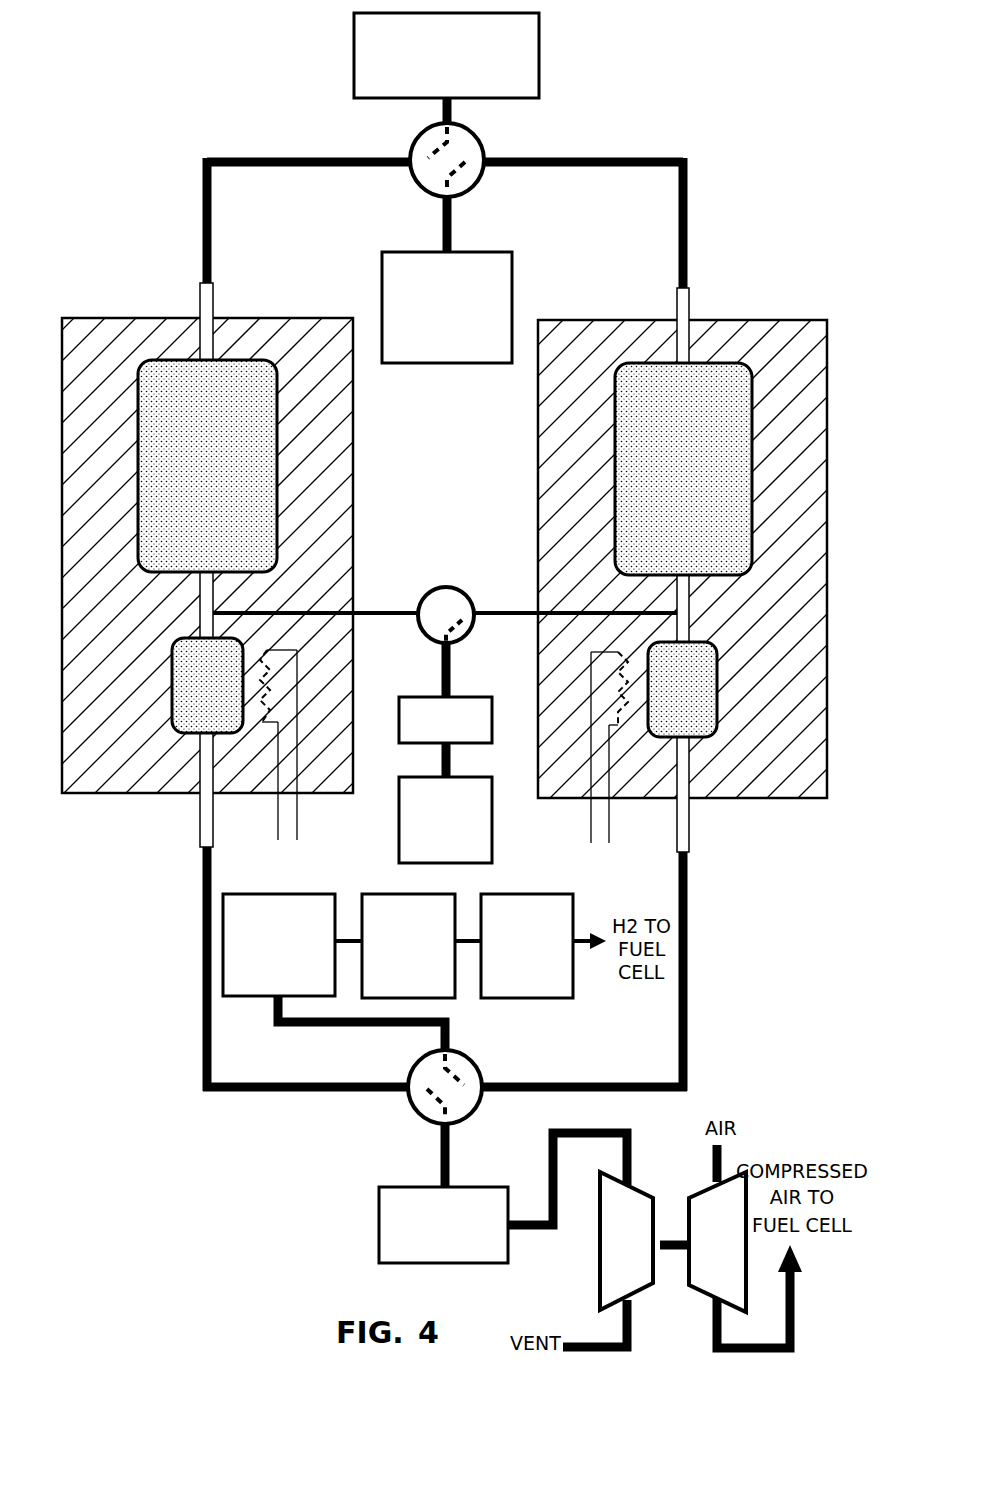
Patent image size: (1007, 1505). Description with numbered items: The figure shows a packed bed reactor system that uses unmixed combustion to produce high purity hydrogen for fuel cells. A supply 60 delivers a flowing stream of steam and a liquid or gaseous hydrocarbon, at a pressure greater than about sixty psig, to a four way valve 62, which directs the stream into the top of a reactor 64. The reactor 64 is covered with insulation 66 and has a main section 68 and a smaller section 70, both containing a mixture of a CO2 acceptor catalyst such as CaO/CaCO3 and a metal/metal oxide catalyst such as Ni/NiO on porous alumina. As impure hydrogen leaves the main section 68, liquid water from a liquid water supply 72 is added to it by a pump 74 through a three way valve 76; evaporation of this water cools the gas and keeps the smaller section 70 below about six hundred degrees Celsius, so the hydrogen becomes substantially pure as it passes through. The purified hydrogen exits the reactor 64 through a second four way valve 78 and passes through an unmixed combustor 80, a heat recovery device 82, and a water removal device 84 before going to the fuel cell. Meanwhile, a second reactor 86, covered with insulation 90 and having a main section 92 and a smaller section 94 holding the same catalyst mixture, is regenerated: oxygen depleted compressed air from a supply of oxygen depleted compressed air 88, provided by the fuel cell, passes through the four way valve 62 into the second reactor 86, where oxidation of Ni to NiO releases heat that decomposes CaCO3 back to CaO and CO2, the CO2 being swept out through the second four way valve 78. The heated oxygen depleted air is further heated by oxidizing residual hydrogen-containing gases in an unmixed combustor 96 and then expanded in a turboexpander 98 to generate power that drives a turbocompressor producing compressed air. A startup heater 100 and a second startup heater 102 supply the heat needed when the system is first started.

The supply 60 is at (398, 262).
The four way valve 62 is at (470, 184).
The reactor 64 is at (680, 302).
The insulation 66 is at (538, 400).
The main section 68 is at (669, 478).
The smaller section 70 is at (668, 703).
The liquid water supply 72 is at (485, 828).
The pump 74 is at (412, 705).
The three way valve 76 is at (447, 592).
The second four way valve 78 is at (410, 1112).
The unmixed combustor 80 is at (265, 978).
The heat recovery device 82 is at (440, 990).
The water removal device 84 is at (553, 990).
The second reactor 86 is at (213, 300).
The supply of oxygen depleted compressed air 88 is at (540, 36).
The insulation 90 is at (353, 398).
The main section 92 is at (193, 476).
The smaller section 94 is at (193, 700).
The unmixed combustor 96 is at (388, 1200).
The turboexpander 98 is at (602, 1280).
The startup heater 100 is at (605, 832).
The second startup heater 102 is at (290, 812).